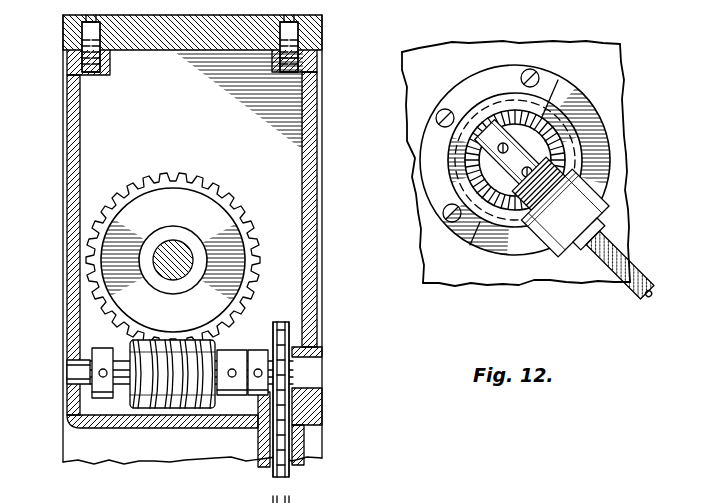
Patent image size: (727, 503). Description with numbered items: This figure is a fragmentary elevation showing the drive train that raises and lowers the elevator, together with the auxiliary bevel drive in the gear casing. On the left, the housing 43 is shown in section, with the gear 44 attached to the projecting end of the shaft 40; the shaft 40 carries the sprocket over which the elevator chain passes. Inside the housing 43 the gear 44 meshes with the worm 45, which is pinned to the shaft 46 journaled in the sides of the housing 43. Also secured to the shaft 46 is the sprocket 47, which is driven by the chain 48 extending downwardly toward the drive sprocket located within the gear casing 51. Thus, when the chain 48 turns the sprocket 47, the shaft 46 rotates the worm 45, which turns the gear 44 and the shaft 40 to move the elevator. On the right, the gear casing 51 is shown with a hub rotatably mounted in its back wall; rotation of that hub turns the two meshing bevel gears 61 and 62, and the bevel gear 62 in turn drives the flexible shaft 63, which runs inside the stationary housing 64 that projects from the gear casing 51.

The shaft 40 is at (168, 272).
The housing 43 is at (78, 131).
The gear 44 is at (222, 220).
The worm 45 is at (195, 402).
The shaft 46 is at (75, 374).
The sprocket 47 is at (262, 396).
The chain 48 is at (283, 462).
The gear casing 51 is at (413, 78).
The bevel gear 61 is at (560, 119).
The bevel gear 62 is at (497, 250).
The flexible shaft 63 is at (648, 298).
The stationary housing 64 is at (612, 282).